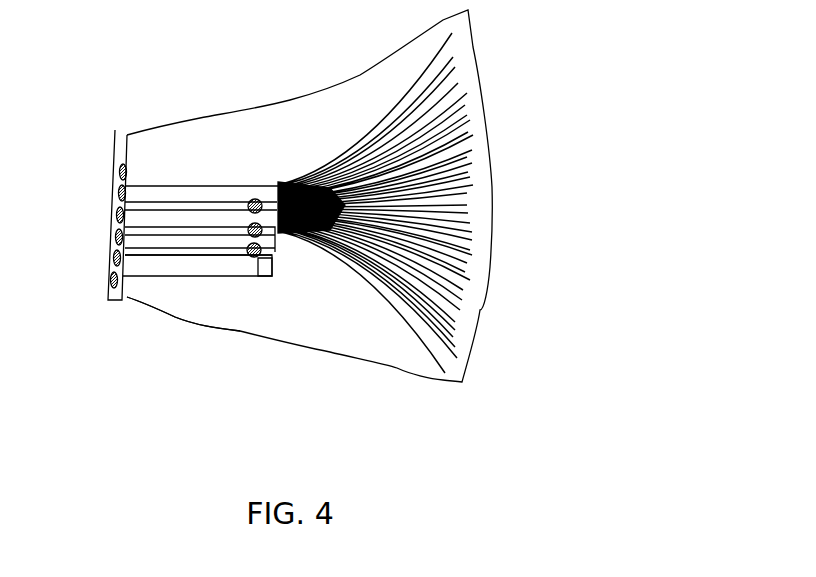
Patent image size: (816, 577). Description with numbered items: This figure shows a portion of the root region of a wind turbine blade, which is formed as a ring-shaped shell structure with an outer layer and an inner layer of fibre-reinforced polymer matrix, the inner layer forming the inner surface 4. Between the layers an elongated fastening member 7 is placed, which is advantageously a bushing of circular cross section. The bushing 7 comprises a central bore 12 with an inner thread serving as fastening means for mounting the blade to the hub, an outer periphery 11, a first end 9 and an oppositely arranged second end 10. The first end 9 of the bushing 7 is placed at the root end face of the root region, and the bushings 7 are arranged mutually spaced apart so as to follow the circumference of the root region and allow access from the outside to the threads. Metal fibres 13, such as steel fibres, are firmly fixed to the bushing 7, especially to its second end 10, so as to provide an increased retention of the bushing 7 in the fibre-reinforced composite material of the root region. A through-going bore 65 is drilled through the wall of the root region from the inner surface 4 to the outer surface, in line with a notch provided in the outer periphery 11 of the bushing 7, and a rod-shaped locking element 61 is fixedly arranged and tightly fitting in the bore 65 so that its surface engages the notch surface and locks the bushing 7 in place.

The inner surface 4 is at (130, 293).
The elongated fastening member 7 is at (175, 186).
The first end 9 is at (117, 184).
The second end 10 is at (280, 183).
The outer periphery 11 is at (197, 276).
The central bore 12 is at (117, 223).
The metal fibres 13 is at (373, 258).
The rod-shaped locking element 61 is at (260, 263).
The through-going bore 65 is at (204, 326).